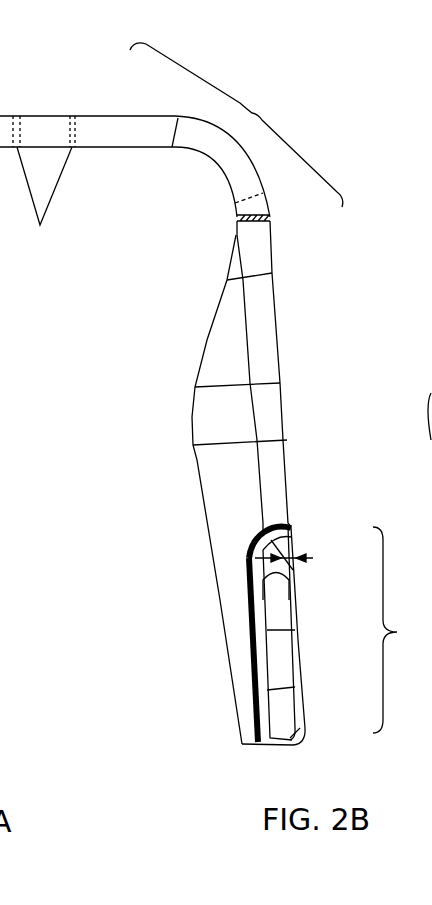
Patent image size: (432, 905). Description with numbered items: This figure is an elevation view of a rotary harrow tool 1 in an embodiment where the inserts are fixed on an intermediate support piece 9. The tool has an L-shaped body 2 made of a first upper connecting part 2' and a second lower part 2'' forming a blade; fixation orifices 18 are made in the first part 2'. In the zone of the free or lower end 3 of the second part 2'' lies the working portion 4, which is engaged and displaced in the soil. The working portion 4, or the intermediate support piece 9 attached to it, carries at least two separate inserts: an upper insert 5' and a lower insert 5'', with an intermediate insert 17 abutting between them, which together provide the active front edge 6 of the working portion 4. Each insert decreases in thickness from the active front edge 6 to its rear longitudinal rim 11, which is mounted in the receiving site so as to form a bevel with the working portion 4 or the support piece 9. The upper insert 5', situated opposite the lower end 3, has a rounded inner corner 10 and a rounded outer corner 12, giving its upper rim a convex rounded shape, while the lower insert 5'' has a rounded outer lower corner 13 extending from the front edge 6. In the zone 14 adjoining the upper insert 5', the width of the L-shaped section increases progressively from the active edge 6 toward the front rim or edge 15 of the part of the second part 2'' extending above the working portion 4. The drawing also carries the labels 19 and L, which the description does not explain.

The rotary harrow tool 1 is at (160, 344).
The body 2 is at (236, 132).
The first upper connecting part 2' is at (87, 102).
The second lower part 2'' is at (277, 367).
The free or lower end 3 is at (228, 763).
The working portion 4 is at (395, 630).
The upper insert 5' is at (329, 583).
The lower insert 5'' is at (336, 684).
The active front edge 6 is at (308, 682).
The intermediate support piece 9 is at (268, 717).
The rounded inner corner 10 is at (250, 577).
The rear longitudinal rim 11 is at (267, 650).
The rounded outer corner 12 is at (293, 578).
The rounded outer lower corner 13 is at (307, 742).
The zone adjoining upper insert 14 is at (295, 538).
The front rim or edge 15 is at (277, 467).
The intermediate insert 17 is at (296, 662).
The fixation orifice 18 is at (44, 190).
The inner lining 19 is at (248, 612).
The length L is at (289, 546).